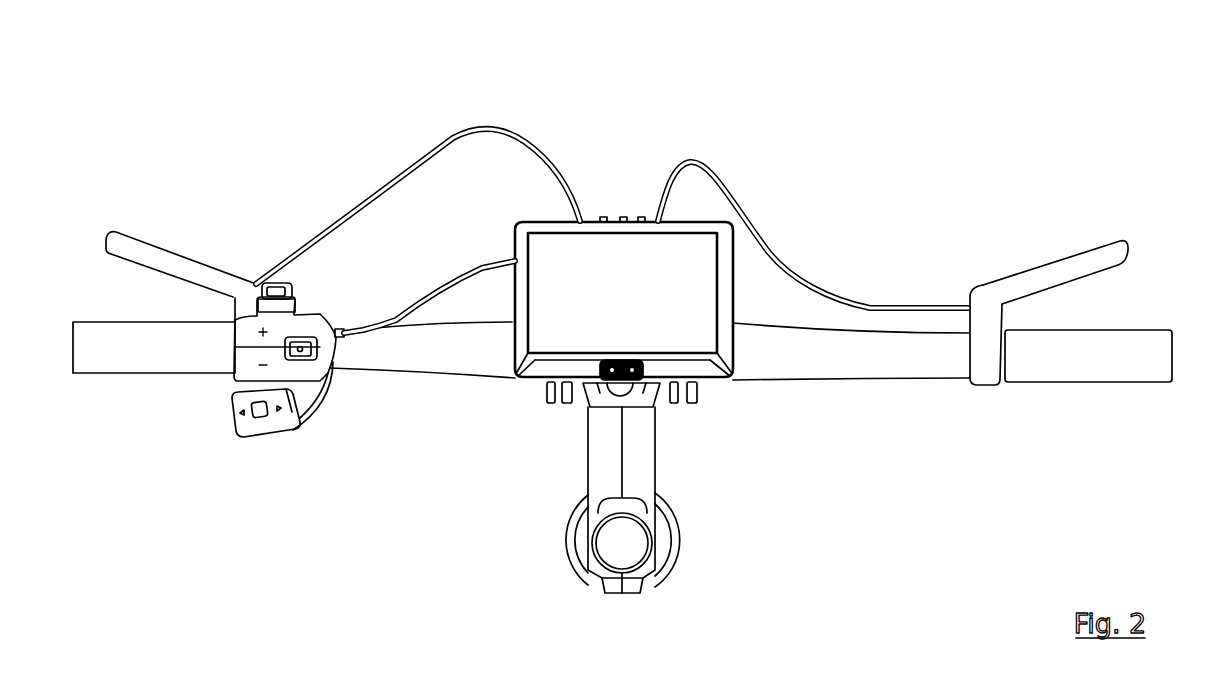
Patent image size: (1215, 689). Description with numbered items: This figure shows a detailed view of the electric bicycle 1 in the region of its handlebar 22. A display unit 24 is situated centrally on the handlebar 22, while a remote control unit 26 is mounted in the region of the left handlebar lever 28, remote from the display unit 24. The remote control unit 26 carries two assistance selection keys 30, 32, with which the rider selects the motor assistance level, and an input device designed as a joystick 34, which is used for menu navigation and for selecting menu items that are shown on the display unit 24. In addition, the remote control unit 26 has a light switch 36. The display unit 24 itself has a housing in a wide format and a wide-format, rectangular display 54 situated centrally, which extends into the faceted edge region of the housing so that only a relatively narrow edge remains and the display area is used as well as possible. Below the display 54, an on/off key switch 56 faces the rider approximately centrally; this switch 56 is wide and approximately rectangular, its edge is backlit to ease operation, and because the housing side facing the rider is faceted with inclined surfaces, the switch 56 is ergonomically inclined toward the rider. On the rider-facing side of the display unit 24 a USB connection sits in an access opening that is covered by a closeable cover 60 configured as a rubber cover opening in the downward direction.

The electric bicycle 1 is at (351, 70).
The handlebar 22 is at (989, 183).
The display unit 24 is at (637, 218).
The remote control unit 26 is at (327, 297).
The left handlebar lever 28 is at (133, 363).
The assistance selection key 30 is at (245, 335).
The assistance selection key 32 is at (235, 435).
The joystick 34 is at (275, 278).
The light switch 36 is at (391, 325).
The display 54 is at (172, 270).
The on/off key switch 56 is at (453, 140).
The cover 60 is at (438, 310).